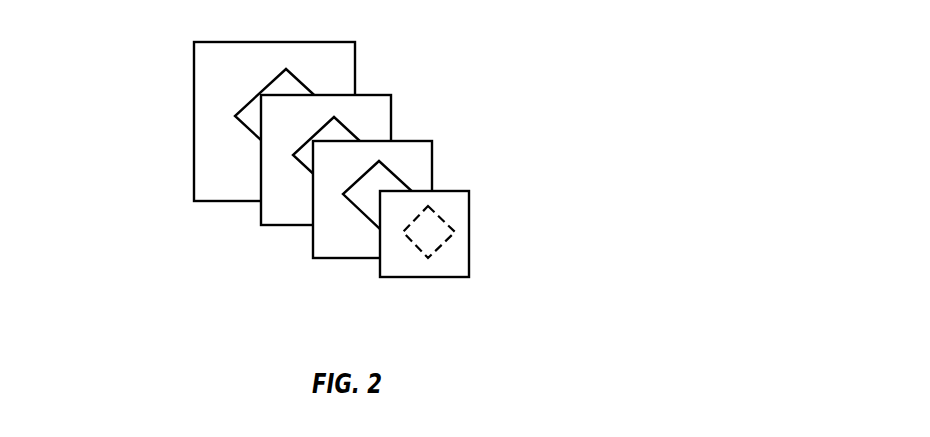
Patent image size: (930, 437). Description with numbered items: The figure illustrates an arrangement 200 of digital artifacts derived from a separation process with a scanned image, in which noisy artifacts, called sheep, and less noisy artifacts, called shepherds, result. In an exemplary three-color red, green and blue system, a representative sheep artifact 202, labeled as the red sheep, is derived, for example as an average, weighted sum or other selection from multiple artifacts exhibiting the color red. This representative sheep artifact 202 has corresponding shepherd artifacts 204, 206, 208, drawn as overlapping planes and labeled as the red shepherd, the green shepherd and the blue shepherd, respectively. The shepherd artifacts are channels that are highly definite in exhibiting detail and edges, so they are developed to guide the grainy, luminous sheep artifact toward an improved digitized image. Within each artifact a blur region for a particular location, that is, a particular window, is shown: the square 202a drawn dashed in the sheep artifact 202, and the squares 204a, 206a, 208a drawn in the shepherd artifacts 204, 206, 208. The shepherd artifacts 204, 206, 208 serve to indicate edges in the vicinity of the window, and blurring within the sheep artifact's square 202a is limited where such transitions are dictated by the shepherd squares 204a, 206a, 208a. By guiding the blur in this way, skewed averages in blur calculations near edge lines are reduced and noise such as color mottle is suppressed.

The color space / layered image diagram 200 is at (562, 69).
The representative sheep artifact 202 is at (458, 252).
The square 202a is at (445, 222).
The shepherd artifact 204 is at (361, 204).
The square 204a is at (401, 186).
The shepherd artifact 206 is at (297, 160).
The square 206a is at (347, 130).
The shepherd artifact 208 is at (233, 108).
The square 208a is at (300, 82).